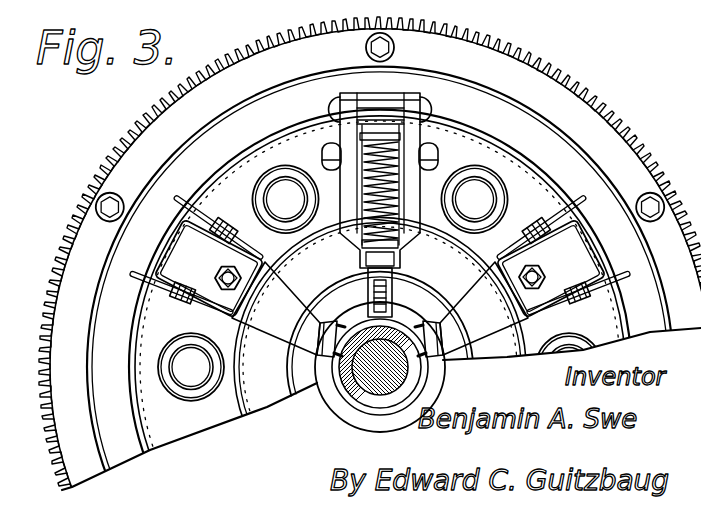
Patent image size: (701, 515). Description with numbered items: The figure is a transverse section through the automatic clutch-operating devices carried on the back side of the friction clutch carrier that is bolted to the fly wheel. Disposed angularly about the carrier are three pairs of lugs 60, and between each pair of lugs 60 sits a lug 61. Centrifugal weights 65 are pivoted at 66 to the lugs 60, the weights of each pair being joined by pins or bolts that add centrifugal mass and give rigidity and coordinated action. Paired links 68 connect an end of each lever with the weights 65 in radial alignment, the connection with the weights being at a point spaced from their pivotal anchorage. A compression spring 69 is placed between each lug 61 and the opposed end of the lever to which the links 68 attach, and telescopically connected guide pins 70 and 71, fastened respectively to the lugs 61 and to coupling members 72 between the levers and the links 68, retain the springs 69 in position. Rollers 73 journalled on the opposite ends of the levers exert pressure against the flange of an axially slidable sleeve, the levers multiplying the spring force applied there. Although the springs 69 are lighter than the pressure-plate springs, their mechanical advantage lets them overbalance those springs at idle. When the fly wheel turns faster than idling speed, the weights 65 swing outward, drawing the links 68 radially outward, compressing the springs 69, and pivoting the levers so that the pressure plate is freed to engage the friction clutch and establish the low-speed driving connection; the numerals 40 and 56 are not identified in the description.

The opening in flywheel 40 is at (180, 383).
The ring plate 56 is at (322, 157).
The lugs 60 is at (324, 150).
The lug 61 is at (385, 130).
The centrifugal weights 65 is at (340, 98).
The pivot 66 is at (490, 141).
The paired links 68 is at (400, 195).
The compression spring 69 is at (400, 212).
The guide pin 70 is at (432, 122).
The guide pin 71 is at (361, 195).
The coupling members 72 is at (402, 257).
The rollers 73 is at (392, 297).